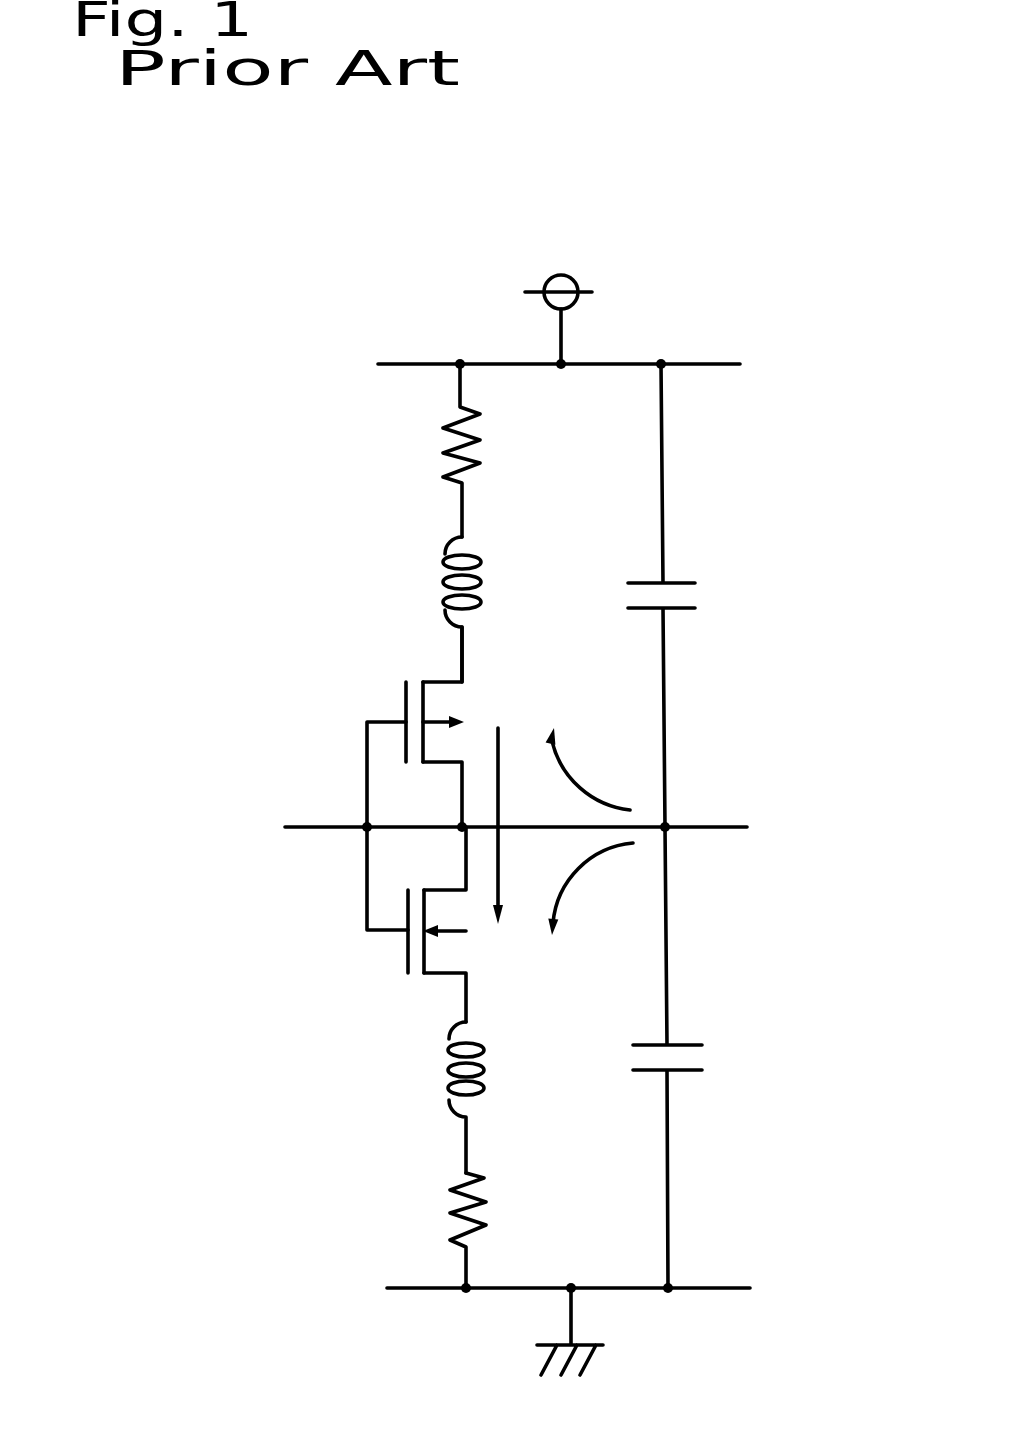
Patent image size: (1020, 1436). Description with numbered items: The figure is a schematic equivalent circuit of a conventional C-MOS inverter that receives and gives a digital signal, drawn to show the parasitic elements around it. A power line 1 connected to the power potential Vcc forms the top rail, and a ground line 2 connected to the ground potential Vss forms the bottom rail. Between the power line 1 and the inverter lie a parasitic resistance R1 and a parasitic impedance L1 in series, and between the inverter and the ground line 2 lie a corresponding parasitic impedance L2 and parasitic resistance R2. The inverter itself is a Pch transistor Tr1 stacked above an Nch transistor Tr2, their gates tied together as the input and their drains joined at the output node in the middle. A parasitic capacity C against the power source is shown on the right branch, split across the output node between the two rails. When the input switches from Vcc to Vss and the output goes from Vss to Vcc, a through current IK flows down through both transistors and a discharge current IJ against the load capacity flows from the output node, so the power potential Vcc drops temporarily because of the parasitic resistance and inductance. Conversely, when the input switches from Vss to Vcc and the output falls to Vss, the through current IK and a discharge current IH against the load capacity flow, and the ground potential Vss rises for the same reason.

The power line 1 is at (573, 280).
The ground line 2 is at (598, 1323).
The parasitic resistance R1 is at (435, 447).
The parasitic resistance R2 is at (440, 1208).
The parasitic impedance L1 is at (435, 587).
The parasitic impedance L2 is at (440, 1065).
The Pch transistor Tr1 is at (390, 690).
The Nch transistor Tr2 is at (393, 965).
The parasitic capacity C is at (700, 598).
The through current IK is at (482, 684).
The discharge current IJ is at (590, 741).
The discharge current IH is at (592, 879).